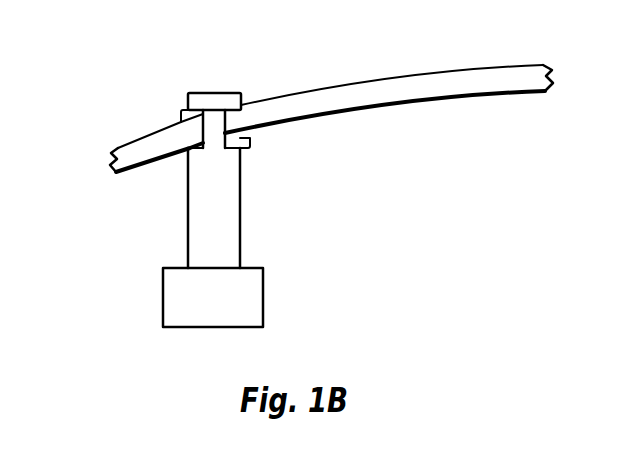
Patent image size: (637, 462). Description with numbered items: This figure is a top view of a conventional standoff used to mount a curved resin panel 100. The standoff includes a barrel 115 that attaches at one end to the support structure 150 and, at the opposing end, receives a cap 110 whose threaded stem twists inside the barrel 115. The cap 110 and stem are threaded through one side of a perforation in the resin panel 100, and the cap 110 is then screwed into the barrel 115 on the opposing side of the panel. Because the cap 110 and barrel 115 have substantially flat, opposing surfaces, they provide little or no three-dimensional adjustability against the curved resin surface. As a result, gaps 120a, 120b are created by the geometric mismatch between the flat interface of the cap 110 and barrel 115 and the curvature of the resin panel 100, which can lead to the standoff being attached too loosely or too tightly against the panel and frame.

The resin panel 100 is at (392, 88).
The standoff cap 110 is at (215, 103).
The barrel 115 is at (235, 235).
The gap 120a is at (180, 116).
The gap 120b is at (250, 141).
The support structure 150 is at (250, 297).